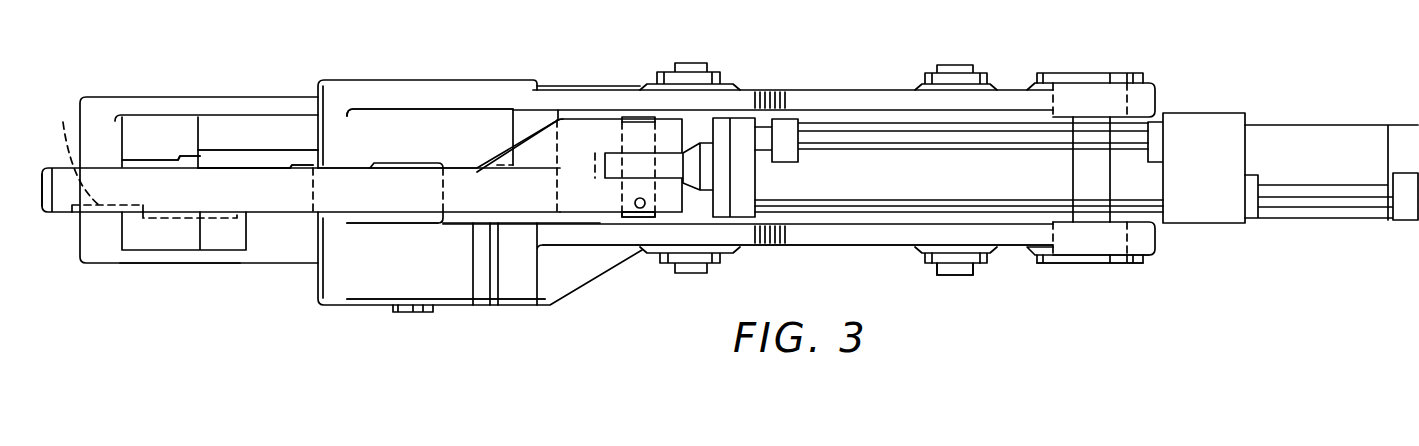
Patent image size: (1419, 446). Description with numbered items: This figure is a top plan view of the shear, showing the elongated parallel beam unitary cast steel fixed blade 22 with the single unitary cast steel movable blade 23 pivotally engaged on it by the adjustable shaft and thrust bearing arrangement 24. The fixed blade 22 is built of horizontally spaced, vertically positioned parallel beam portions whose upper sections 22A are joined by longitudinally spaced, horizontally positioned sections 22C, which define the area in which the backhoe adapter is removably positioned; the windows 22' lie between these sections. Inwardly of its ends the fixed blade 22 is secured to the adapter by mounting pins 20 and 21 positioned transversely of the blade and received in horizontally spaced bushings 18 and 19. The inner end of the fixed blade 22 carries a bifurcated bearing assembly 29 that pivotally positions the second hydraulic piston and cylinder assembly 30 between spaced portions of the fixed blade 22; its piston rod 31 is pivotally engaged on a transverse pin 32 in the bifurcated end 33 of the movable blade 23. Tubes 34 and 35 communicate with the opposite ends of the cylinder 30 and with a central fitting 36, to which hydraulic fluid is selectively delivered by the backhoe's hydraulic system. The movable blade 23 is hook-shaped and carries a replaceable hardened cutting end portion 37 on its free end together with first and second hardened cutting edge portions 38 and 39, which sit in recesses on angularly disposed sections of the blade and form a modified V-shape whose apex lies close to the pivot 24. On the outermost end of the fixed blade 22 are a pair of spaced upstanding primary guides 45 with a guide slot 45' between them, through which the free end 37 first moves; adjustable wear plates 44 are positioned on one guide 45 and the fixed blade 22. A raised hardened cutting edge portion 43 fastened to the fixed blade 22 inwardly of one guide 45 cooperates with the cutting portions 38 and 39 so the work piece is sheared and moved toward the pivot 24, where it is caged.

The third bushing 18 is at (662, 265).
The fourth bushing 19 is at (975, 264).
The mounting pin 20 is at (690, 272).
The mounting pin 21 is at (958, 68).
The fixed blade 22 is at (180, 284).
The carriage side windows 22' is at (446, 204).
The upper section 22A is at (832, 95).
The horizontally positioned sections 22C is at (278, 108).
The movable blade 23 is at (135, 196).
The adjustable shaft and thrust bearing arrangement 24 is at (386, 312).
The bifurcated bearing assembly 29 is at (1105, 263).
The second hydraulic piston and cylinder assembly 30 is at (997, 185).
The piston rod 31 is at (710, 170).
The transverse pin 32 is at (628, 218).
The bifurcated end 33 is at (588, 135).
The tube 34 is at (848, 143).
The tube 35 is at (1300, 195).
The central fitting 36 is at (1210, 212).
The cutting end portion 37 is at (47, 230).
The first hardened cutting edge portion 38 is at (253, 176).
The second hardened cutting edge portion 39 is at (305, 170).
The raised hardened cutting edge portion 43 is at (235, 160).
The adjustable wear plates 44 is at (87, 159).
The primary guides 45 is at (185, 189).
The guide slot 45' is at (175, 111).